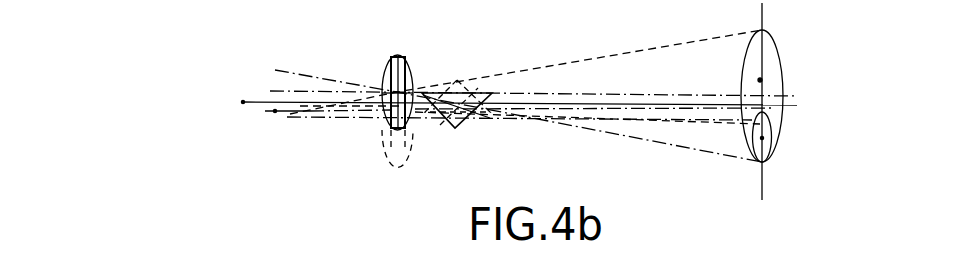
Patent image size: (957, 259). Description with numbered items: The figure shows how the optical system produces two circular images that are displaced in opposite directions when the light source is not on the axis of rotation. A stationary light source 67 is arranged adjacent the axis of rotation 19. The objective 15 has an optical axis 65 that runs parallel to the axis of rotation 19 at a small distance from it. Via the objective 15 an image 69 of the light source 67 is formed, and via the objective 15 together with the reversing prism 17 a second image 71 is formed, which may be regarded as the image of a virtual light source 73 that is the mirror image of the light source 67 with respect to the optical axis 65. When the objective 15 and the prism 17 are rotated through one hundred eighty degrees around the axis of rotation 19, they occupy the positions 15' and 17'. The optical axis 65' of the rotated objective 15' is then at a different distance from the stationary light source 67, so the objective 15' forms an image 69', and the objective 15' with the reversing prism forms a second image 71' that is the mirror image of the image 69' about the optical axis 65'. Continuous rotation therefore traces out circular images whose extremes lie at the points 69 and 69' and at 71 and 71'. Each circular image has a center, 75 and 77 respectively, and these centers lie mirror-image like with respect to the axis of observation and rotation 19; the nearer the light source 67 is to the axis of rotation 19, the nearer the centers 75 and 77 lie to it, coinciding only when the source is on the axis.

The objective 15 is at (411, 75).
The objective position after rotation 15' is at (397, 163).
The reversing prism 17 is at (457, 131).
The reversing prism position after rotation 17' is at (457, 72).
The axis of rotation 19 is at (243, 103).
The optical axis 65 is at (527, 64).
The optical axis of the rotated objective 65' is at (523, 148).
The light source 67 is at (275, 112).
The image 69 is at (558, 82).
The image 69' is at (793, 137).
The second image 71 is at (797, 175).
The second image 71' is at (623, 107).
The mirror-image light source 73 is at (275, 70).
The center 75 is at (770, 148).
The center 77 is at (760, 80).